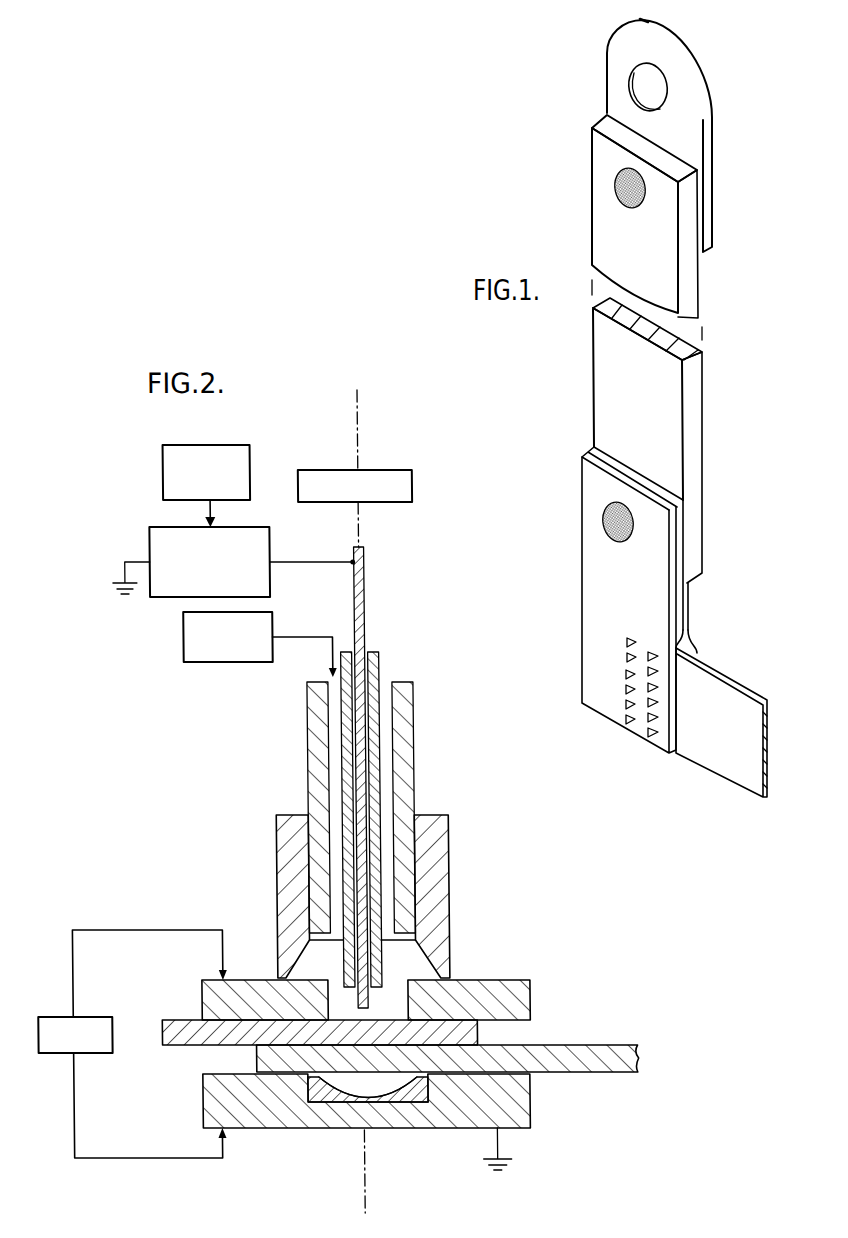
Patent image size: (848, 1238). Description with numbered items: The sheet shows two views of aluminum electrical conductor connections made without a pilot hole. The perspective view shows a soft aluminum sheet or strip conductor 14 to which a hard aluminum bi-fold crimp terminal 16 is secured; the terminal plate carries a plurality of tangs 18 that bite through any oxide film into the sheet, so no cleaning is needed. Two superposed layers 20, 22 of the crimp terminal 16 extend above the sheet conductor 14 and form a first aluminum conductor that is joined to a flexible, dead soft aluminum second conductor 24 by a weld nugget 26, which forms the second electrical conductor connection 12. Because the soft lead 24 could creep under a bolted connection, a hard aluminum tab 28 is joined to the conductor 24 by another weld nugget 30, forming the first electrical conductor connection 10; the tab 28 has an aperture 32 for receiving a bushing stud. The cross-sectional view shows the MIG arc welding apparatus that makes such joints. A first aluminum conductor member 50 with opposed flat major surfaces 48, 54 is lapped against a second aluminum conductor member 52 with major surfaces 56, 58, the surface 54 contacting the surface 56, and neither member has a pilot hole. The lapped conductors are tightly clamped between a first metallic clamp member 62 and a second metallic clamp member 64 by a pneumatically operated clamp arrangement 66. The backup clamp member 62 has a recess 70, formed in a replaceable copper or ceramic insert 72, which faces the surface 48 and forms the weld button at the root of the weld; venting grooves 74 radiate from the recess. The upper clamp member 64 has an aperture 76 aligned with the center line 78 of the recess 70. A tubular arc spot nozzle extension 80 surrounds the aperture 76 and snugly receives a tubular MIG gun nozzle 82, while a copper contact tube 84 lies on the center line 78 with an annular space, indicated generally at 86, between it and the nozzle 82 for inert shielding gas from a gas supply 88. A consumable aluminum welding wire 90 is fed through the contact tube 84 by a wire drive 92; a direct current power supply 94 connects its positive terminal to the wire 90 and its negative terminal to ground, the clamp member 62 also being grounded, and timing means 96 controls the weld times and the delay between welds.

In FIG. 1, the first electrical conductor connection 10 is at (582, 195).
In FIG. 1, the second electrical conductor connection 12 is at (578, 528).
In FIG. 1, the sheet or strip conductor 14 is at (730, 703).
In FIG. 1, the crimp terminal 16 is at (585, 602).
In FIG. 1, the tangs 18 is at (626, 720).
In FIG. 1, the first superposed layer of crimp terminal 20 is at (686, 592).
In FIG. 1, the second superposed layer of crimp terminal 22 is at (679, 612).
In FIG. 1, the second aluminum conductor 24 is at (702, 418).
In FIG. 1, the weld nugget 26 is at (622, 549).
In FIG. 1, the tab 28 is at (713, 145).
In FIG. 1, the weld nugget 30 is at (638, 208).
In FIG. 1, the aperture 32 is at (637, 82).
In FIG. 2, the first major surface of first conductor member 48 is at (464, 1059).
In FIG. 2, the first aluminum conductor member 50 is at (447, 1059).
In FIG. 2, the second aluminum conductor member 52 is at (312, 1035).
In FIG. 2, the second major surface of first conductor member 54 is at (571, 1045).
In FIG. 2, the first major surface of second conductor member 56 is at (186, 1048).
In FIG. 2, the second major surface of second conductor member 58 is at (195, 1012).
In FIG. 2, the first metallic clamp member 62 is at (519, 1115).
In FIG. 2, the second metallic clamp member 64 is at (524, 993).
In FIG. 2, the clamp arrangement 66 is at (84, 1017).
In FIG. 2, the recess 70 is at (343, 1090).
In FIG. 2, the insert 72 is at (415, 1104).
In FIG. 2, the grooves 74 is at (236, 1073).
In FIG. 2, the aperture 76 is at (398, 992).
In FIG. 2, the center line 78 is at (358, 413).
In FIG. 2, the tubular arc spot nozzle extension 80 is at (444, 887).
In FIG. 2, the tubular MIG gun nozzle 82 is at (410, 757).
In FIG. 2, the contact tube 84 is at (376, 660).
In FIG. 2, the annular gas passage 86 is at (383, 707).
In FIG. 2, the gas supply 88 is at (226, 662).
In FIG. 2, the welding wire 90 is at (362, 587).
In FIG. 2, the wire drive 92 is at (392, 470).
In FIG. 2, the direct current power supply 94 is at (268, 568).
In FIG. 2, the timing means 96 is at (162, 465).